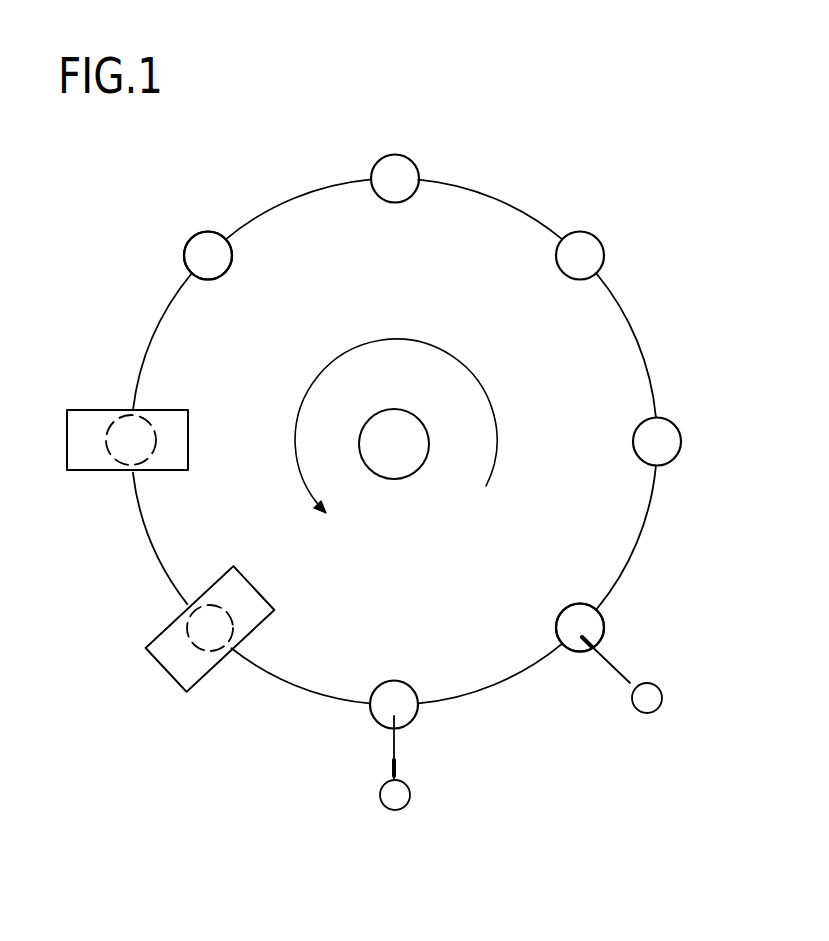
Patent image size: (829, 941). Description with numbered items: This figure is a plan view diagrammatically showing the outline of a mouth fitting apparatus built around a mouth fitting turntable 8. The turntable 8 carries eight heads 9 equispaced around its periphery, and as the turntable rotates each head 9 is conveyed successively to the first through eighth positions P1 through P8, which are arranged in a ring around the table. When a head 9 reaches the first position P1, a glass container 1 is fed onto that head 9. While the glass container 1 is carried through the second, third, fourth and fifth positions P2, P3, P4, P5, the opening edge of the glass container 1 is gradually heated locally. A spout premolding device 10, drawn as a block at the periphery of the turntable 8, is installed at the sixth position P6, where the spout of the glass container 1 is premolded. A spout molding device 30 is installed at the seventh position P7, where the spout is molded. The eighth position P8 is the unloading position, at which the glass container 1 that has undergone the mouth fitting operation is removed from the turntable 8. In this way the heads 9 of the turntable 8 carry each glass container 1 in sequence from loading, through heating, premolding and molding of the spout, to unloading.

The glass container 1 is at (655, 695).
The mouth fitting turntable 8 is at (628, 336).
The head 9 is at (217, 231).
The spout premolding device 10 is at (75, 410).
The spout molding device 30 is at (153, 652).
The first position P1 is at (603, 623).
The second position P2 is at (664, 438).
The third position P3 is at (579, 238).
The fourth position P4 is at (385, 166).
The fifth position P5 is at (196, 259).
The sixth position P6 is at (100, 471).
The seventh position P7 is at (220, 665).
The eighth position P8 is at (415, 717).